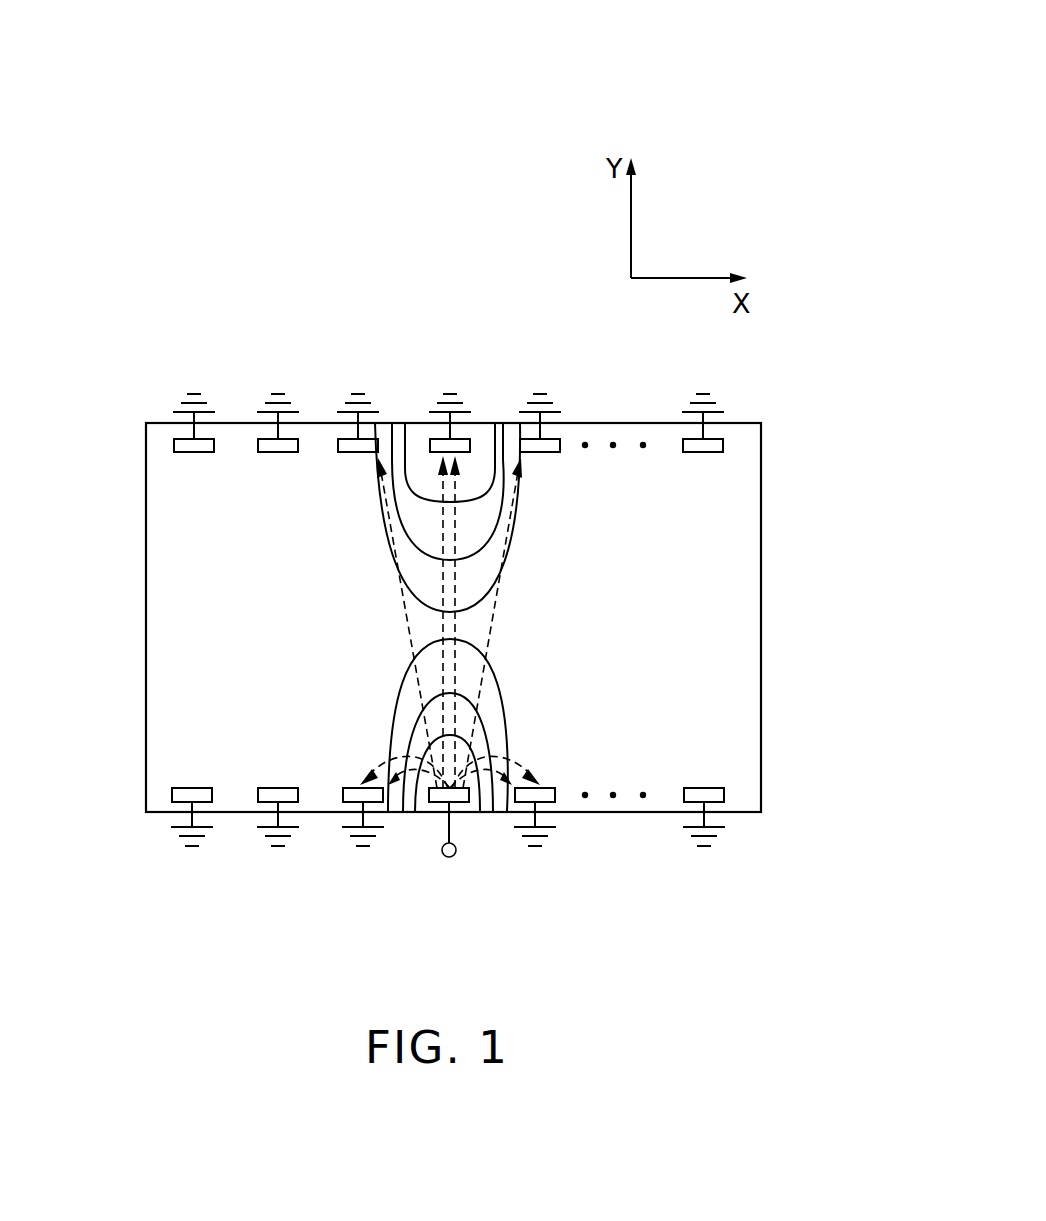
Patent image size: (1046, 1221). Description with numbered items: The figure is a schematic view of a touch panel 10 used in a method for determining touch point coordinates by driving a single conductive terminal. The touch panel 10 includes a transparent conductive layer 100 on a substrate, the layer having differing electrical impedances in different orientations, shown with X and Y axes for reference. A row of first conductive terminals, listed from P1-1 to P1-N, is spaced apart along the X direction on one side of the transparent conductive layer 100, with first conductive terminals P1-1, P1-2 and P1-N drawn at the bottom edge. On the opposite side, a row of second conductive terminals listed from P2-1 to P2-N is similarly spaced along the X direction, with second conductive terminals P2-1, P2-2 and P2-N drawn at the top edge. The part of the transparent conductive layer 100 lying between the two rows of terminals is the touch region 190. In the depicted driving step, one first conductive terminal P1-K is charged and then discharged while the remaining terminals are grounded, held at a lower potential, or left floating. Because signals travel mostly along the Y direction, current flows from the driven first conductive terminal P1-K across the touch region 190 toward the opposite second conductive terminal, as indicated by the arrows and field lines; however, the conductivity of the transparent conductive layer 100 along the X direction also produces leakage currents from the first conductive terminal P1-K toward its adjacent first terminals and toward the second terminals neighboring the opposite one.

The touch panel 10 is at (340, 90).
The transparent conductive layer 100 is at (750, 601).
The touch region 190 is at (666, 663).
The second conductive terminal P2-1 is at (196, 453).
The second conductive terminal P2-2 is at (273, 453).
The second conductive terminal P2-N is at (711, 453).
The first conductive terminal P1-1 is at (270, 787).
The first conductive terminal P1-2 is at (187, 787).
The first conductive terminal P1-K is at (457, 803).
The first conductive terminal P1-N is at (712, 787).